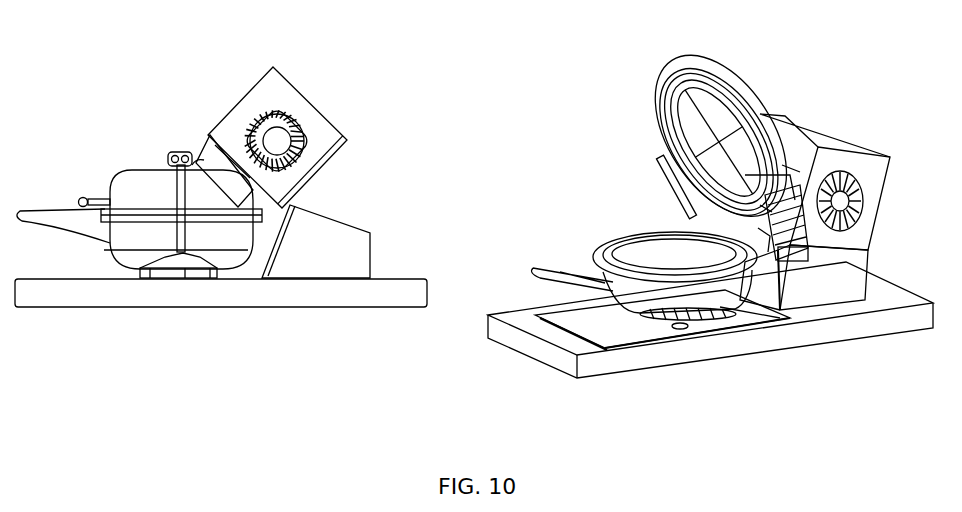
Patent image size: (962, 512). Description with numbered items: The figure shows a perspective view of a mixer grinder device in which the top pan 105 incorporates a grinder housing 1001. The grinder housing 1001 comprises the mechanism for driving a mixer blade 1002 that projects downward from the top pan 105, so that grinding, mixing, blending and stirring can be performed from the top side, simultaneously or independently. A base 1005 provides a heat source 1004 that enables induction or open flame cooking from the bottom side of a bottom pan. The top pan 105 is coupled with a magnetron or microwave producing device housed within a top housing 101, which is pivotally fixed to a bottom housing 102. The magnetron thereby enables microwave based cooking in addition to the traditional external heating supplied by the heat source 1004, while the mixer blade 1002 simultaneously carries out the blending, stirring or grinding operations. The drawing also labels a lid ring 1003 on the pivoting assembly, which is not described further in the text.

The top housing 101 is at (338, 133).
The bottom housing 102 is at (338, 238).
The top pan 105 is at (593, 253).
The grinder housing 1001 is at (168, 152).
The mixer blade 1002 is at (660, 168).
The lid ring 1003 is at (658, 134).
The heat source 1004 is at (745, 340).
The base 1005 is at (577, 378).